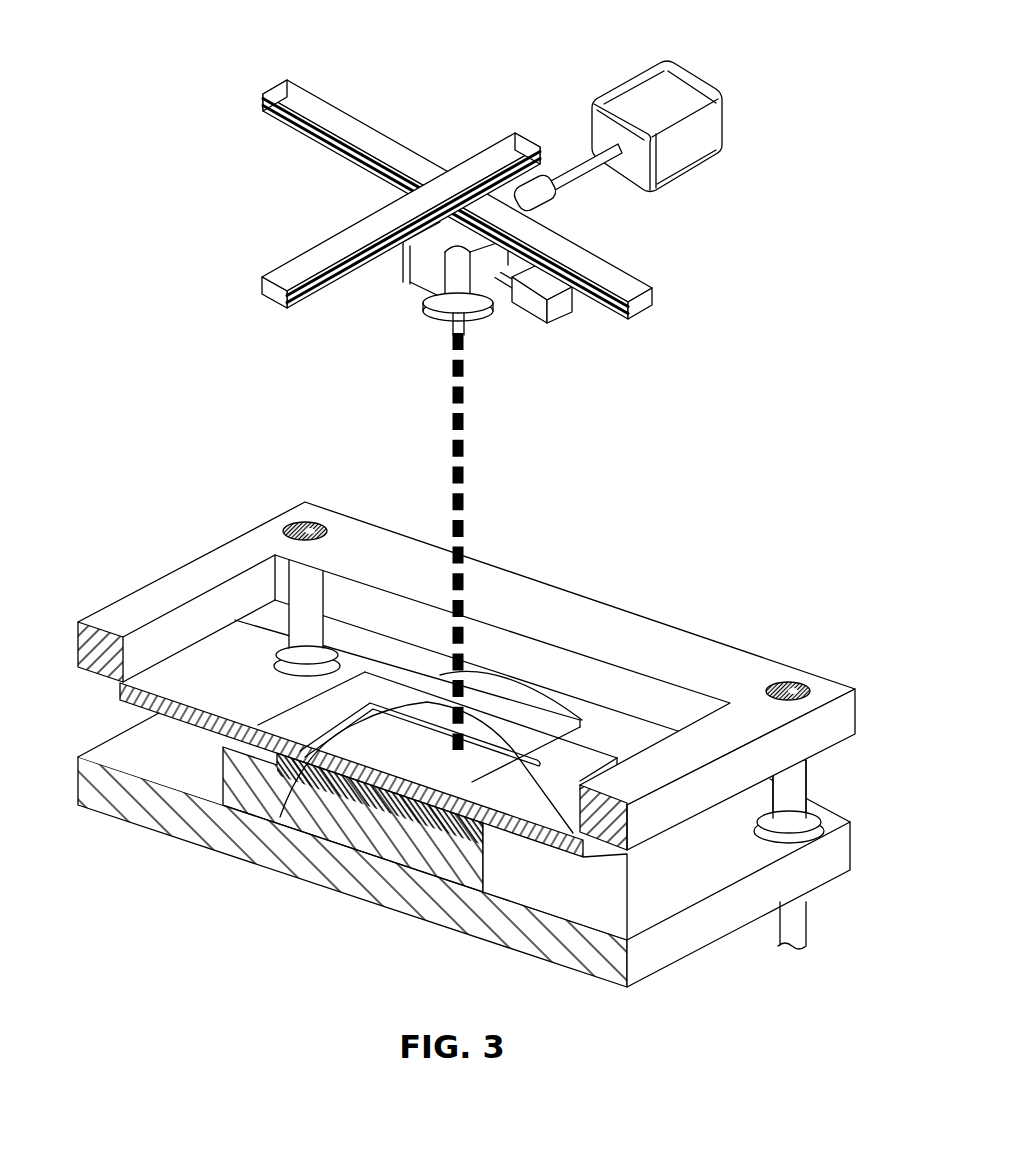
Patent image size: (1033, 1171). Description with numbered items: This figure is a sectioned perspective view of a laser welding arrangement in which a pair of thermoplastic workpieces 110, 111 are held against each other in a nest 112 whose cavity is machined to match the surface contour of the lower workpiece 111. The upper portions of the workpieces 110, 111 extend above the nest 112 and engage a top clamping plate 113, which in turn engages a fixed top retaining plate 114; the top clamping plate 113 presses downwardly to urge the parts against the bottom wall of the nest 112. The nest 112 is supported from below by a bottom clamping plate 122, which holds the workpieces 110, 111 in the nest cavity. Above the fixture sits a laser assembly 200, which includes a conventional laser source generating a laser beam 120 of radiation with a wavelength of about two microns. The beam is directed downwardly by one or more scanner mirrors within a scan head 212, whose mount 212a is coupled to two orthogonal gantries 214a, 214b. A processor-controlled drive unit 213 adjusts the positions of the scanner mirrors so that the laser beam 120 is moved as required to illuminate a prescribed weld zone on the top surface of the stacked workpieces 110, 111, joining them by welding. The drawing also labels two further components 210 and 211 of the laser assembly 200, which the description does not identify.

The laser assembly 200 is at (538, 197).
The motor 210 is at (657, 92).
The drive shaft 211 is at (563, 177).
The scan head 212 is at (410, 280).
The mount 212a is at (448, 247).
The drive unit 213 is at (532, 307).
The gantry 214a is at (307, 103).
The gantry 214b is at (300, 266).
The laser beam 120 is at (452, 457).
The top retaining plate 114 is at (225, 562).
The top clamping plate 113 is at (193, 717).
The workpiece 111 is at (327, 780).
The nest 112 is at (500, 853).
The workpiece 110 is at (373, 860).
The bottom clamping plate 122 is at (657, 957).